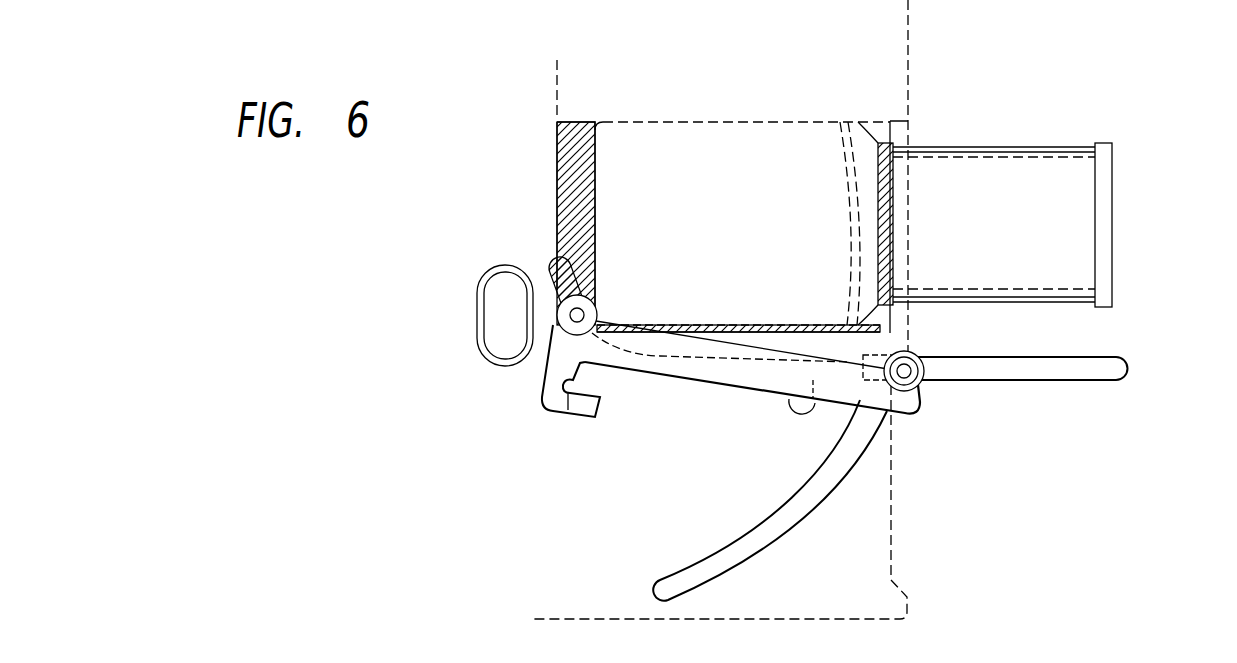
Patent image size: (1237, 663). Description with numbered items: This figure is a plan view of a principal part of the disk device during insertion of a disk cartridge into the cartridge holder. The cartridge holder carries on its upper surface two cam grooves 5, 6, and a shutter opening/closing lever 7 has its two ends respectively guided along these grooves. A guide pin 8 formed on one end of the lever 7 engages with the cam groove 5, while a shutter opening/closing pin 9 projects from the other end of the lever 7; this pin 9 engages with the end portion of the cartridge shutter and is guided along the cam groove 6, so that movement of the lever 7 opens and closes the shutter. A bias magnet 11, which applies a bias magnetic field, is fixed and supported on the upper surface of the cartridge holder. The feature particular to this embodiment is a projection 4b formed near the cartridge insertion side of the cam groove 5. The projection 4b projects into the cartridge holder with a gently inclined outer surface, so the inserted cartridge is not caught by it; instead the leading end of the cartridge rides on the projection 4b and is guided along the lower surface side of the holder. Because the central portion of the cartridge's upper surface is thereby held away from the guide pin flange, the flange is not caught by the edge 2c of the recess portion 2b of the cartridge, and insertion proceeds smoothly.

The recess portion 2b is at (555, 149).
The edge 2c is at (741, 326).
The projection 4b is at (509, 283).
The cam groove 5 is at (592, 263).
The cam groove 6 is at (800, 510).
The shutter opening/closing lever 7 is at (760, 398).
The guide pin 8 is at (597, 318).
The shutter opening/closing pin 9 is at (915, 383).
The bias magnet 11 is at (1020, 168).